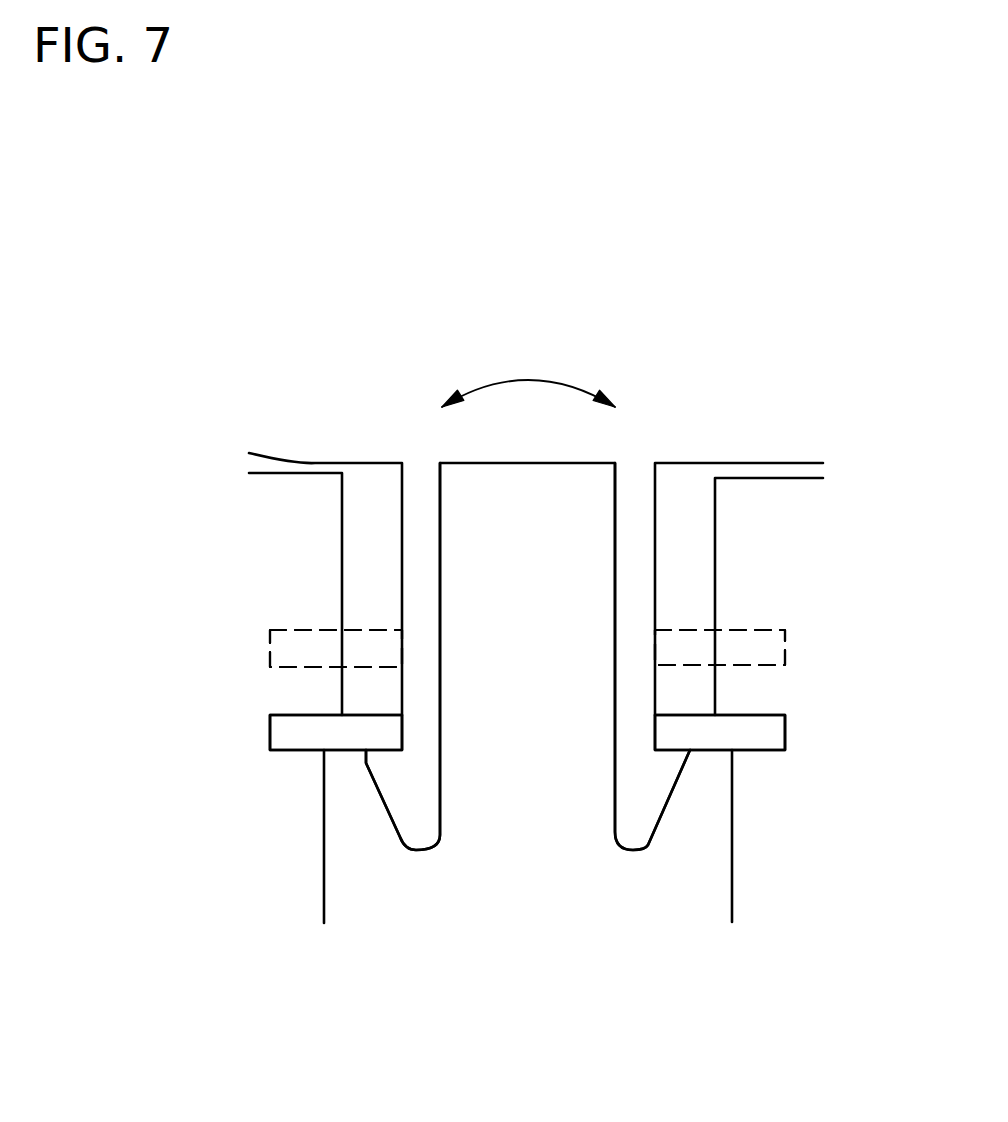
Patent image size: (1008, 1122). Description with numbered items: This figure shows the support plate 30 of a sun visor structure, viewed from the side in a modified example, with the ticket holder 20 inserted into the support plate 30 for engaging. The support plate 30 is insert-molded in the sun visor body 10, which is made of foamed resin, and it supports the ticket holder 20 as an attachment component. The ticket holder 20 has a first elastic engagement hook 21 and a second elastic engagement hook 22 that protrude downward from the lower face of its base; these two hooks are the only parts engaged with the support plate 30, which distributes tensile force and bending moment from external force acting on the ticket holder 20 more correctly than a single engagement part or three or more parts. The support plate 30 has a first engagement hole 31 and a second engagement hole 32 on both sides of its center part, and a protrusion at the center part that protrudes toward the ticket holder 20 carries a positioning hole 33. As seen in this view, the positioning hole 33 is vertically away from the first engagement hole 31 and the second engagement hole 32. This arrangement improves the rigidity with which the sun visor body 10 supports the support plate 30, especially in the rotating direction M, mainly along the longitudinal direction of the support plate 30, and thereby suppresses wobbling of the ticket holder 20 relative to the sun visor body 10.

The sun visor body 10 is at (891, 694).
The ticket holder 20 is at (764, 394).
The first elastic engagement hook 21 is at (640, 852).
The second elastic engagement hook 22 is at (403, 656).
The support plate 30 is at (770, 715).
The first engagement hole 31 is at (640, 742).
The second engagement hole 32 is at (336, 732).
The positioning hole 33 is at (655, 643).
The rotating direction M is at (490, 380).